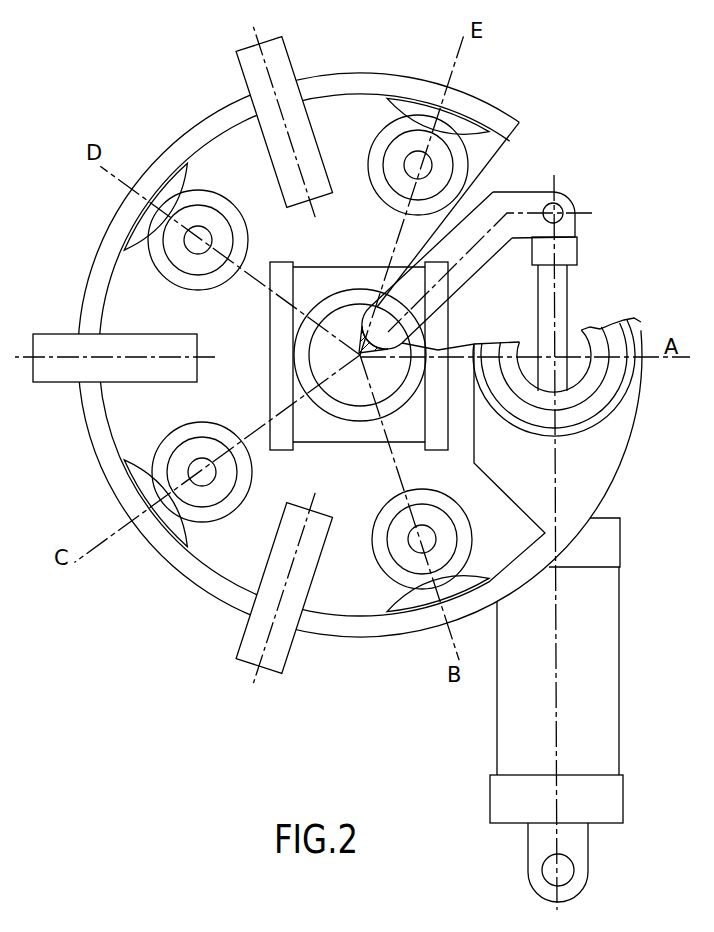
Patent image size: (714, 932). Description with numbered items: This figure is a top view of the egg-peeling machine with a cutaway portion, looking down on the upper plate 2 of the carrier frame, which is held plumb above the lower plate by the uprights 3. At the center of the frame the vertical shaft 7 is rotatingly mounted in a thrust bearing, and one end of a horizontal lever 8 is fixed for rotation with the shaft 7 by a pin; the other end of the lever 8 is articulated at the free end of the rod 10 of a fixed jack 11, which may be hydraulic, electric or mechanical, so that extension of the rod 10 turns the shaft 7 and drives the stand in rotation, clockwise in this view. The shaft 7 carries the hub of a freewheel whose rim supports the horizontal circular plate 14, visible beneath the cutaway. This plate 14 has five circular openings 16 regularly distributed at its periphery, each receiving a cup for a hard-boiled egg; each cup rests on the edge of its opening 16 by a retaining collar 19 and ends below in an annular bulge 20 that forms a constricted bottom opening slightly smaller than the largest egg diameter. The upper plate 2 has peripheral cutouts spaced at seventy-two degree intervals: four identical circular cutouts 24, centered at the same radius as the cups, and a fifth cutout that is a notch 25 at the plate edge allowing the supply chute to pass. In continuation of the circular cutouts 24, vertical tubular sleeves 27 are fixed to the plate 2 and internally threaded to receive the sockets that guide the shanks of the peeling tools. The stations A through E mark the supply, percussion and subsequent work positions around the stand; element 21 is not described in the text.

The upper plate 2 is at (347, 112).
The uprights 3 is at (246, 58).
The vertical shaft 7 is at (392, 336).
The horizontal lever 8 is at (515, 202).
The rod 10 is at (560, 290).
The jack 11 is at (620, 685).
The horizontal circular plate 14 is at (105, 438).
The circular openings 16 is at (128, 228).
The retaining collar 19 is at (612, 380).
The annular bulge 20 is at (578, 392).
The central bearing 21 is at (353, 390).
The circular cutouts 24 is at (200, 212).
The notch 25 is at (515, 503).
The vertical tubular sleeves 27 is at (213, 510).